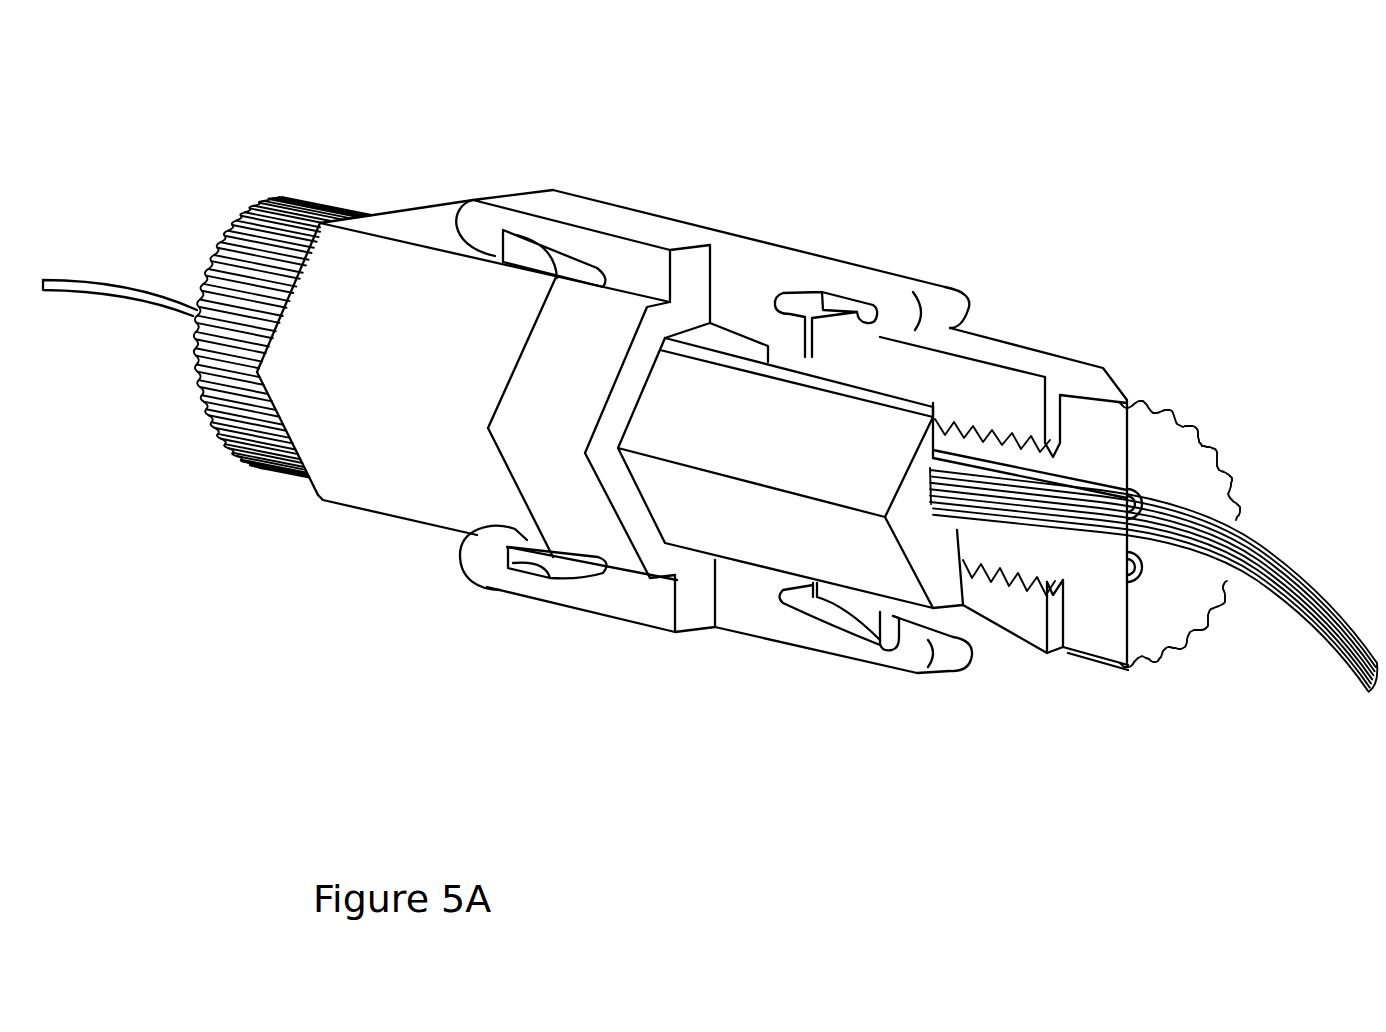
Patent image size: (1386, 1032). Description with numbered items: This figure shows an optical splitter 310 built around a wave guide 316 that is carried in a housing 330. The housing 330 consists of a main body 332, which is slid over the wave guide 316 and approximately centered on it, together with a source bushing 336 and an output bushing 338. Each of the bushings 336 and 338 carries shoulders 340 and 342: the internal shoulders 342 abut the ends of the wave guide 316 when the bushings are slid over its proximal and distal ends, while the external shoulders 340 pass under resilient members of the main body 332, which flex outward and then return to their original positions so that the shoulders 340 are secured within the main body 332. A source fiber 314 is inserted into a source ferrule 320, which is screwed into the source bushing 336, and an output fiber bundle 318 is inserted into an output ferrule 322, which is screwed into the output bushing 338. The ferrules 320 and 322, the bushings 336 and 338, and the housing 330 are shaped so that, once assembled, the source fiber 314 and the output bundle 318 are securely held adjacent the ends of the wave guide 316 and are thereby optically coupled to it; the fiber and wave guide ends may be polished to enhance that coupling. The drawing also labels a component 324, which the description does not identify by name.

The optical splitter 310 is at (972, 165).
The source fiber 314 is at (68, 278).
The wave guide 316 is at (963, 607).
The output fiber bundle 318 is at (1293, 572).
The source ferrule 320 is at (323, 197).
The output ferrule 322 is at (1187, 413).
The flange 324 is at (553, 188).
The housing 330 is at (598, 692).
The main body 332 is at (699, 232).
The source bushing 336 is at (415, 207).
The output bushing 338 is at (1056, 356).
The external shoulders 340 is at (866, 306).
The internal shoulders 342 is at (860, 297).